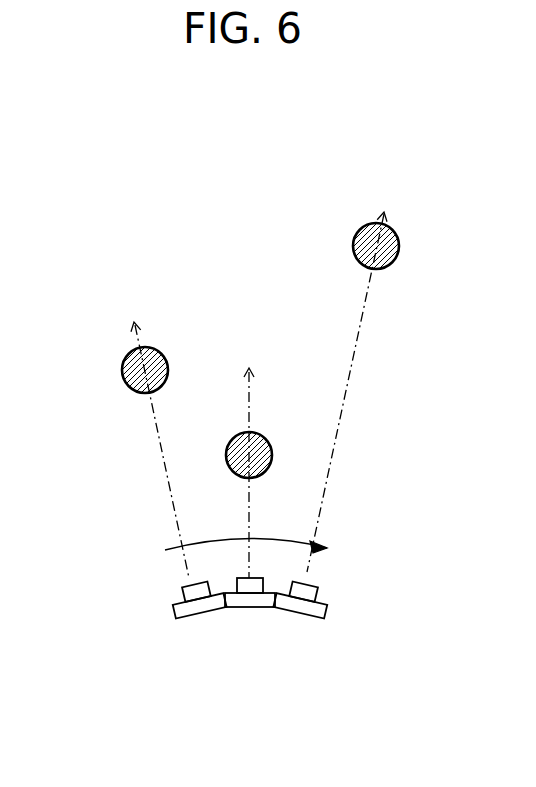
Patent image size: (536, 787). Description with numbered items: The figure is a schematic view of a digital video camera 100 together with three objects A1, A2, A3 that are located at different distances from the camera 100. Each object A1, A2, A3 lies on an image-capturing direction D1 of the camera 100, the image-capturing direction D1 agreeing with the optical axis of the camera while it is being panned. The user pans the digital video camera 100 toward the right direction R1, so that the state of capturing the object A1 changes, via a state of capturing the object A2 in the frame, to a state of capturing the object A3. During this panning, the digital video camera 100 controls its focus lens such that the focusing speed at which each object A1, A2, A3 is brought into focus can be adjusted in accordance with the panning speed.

The object A1 is at (130, 363).
The object A2 is at (240, 447).
The object A3 is at (360, 237).
The image-capturing direction D1 is at (136, 328).
The right direction R1 is at (312, 542).
The digital video camera 100 is at (295, 608).